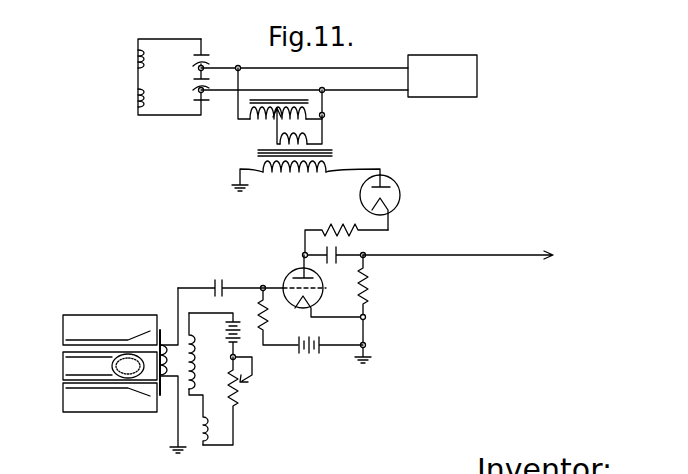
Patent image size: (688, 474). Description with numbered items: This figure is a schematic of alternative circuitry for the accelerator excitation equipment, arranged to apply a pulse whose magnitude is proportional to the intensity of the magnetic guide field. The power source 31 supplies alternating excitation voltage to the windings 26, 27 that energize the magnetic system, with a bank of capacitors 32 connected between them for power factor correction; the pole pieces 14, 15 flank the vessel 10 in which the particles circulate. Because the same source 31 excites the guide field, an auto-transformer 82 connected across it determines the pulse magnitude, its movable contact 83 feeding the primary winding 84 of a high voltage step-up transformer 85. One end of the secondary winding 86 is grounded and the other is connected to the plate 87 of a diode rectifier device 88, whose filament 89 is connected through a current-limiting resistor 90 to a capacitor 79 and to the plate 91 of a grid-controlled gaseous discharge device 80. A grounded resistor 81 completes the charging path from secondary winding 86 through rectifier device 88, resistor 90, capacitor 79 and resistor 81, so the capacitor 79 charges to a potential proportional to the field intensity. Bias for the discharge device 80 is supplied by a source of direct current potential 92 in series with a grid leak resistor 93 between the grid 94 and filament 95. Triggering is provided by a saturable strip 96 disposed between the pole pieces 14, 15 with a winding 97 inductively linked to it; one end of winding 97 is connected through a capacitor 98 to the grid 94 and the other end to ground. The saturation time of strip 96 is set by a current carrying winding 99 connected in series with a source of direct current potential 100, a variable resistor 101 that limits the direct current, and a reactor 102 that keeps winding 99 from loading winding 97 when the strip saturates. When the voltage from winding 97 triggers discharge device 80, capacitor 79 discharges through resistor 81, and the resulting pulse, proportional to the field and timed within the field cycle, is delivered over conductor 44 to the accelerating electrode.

The vessel 10 is at (63, 372).
The pole piece 14 is at (89, 316).
The pole piece 15 is at (108, 410).
The winding 26 is at (136, 65).
The winding 27 is at (135, 98).
The power source 31 is at (446, 98).
The capacitors 32 is at (196, 78).
The conductor 44 is at (512, 254).
The capacitor 79 is at (331, 254).
The grid-controlled gaseous discharge device 80 is at (290, 278).
The resistor 81 is at (369, 283).
The auto-transformer 82 is at (315, 115).
The movable contact 83 is at (270, 136).
The primary winding 84 is at (316, 142).
The high voltage step-up transformer 85 is at (335, 153).
The secondary winding 86 is at (306, 177).
The plate 87 is at (389, 179).
The diode rectifier device 88 is at (404, 190).
The filament 89 is at (398, 207).
The current-limiting resistor 90 is at (346, 231).
The plate 91 is at (299, 276).
The source of direct current potential 92 is at (320, 343).
The grid leak resistor 93 is at (268, 320).
The grid 94 is at (312, 283).
The filament 95 is at (313, 305).
The saturable strip 96 is at (169, 326).
The winding 97 is at (165, 357).
The capacitor 98 is at (217, 280).
The current carrying winding 99 is at (224, 331).
The source of direct current potential 100 is at (227, 340).
The variable resistor 101 is at (240, 391).
The reactor 102 is at (206, 424).